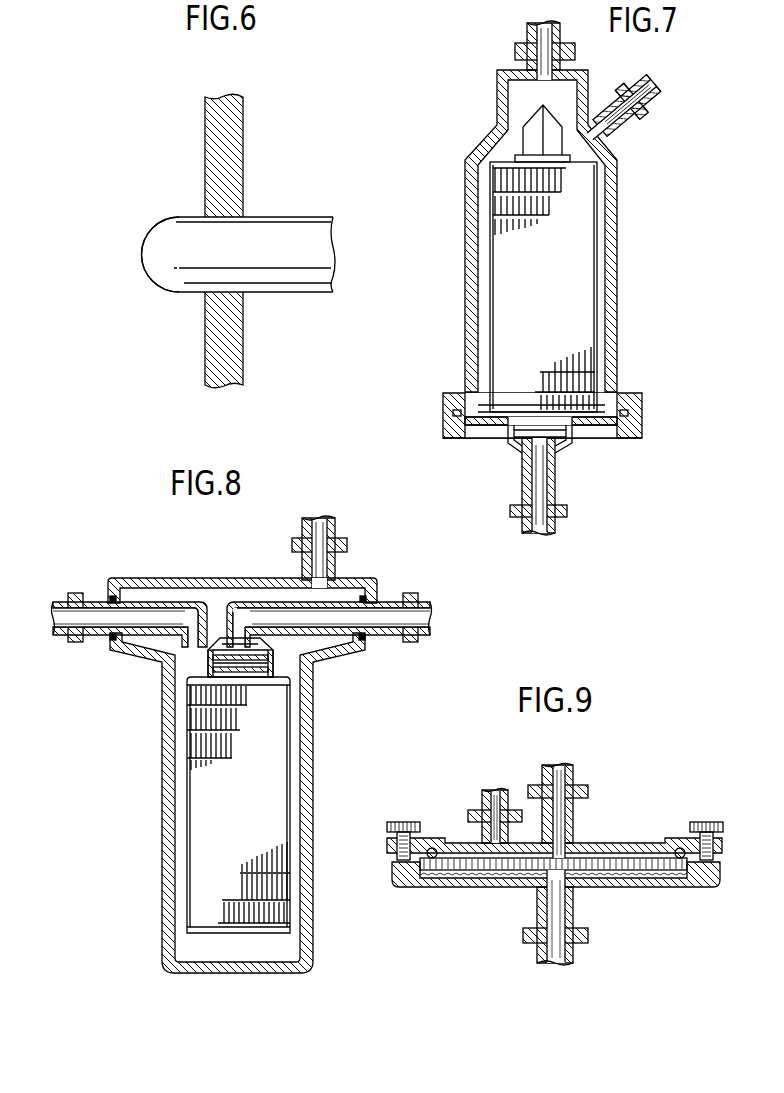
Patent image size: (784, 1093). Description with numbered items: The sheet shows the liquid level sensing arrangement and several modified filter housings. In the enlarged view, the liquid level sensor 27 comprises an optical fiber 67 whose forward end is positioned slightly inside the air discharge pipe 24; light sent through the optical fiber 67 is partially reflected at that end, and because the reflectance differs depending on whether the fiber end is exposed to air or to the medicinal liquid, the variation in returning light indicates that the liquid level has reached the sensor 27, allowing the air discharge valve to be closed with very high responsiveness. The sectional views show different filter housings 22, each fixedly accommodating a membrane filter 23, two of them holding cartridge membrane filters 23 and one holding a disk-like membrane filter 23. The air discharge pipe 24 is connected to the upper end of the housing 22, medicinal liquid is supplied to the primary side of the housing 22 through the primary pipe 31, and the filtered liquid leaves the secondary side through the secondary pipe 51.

In FIG. 7, the filter housing 22 is at (554, 237).
In FIG. 8, the filter housing 22 is at (165, 740).
In FIG. 9, the filter housing 22 is at (466, 886).
In FIG. 7, the cartridge membrane filter 23 is at (543, 258).
In FIG. 8, the cartridge membrane filter 23 is at (190, 748).
In FIG. 9, the cartridge membrane filter 23 is at (631, 860).
In FIG. 6, the air discharge pipe 24 is at (233, 166).
In FIG. 8, the air discharge pipe 24 is at (298, 528).
In FIG. 9, the air discharge pipe 24 is at (480, 797).
In FIG. 6, the liquid level sensor 27 is at (316, 295).
In FIG. 8, the primary pipe 31 is at (57, 636).
In FIG. 9, the primary pipe 31 is at (575, 771).
In FIG. 7, the secondary pipe 51 is at (538, 486).
In FIG. 8, the secondary pipe 51 is at (418, 643).
In FIG. 9, the secondary pipe 51 is at (575, 953).
In FIG. 6, the optical fiber 67 is at (160, 292).